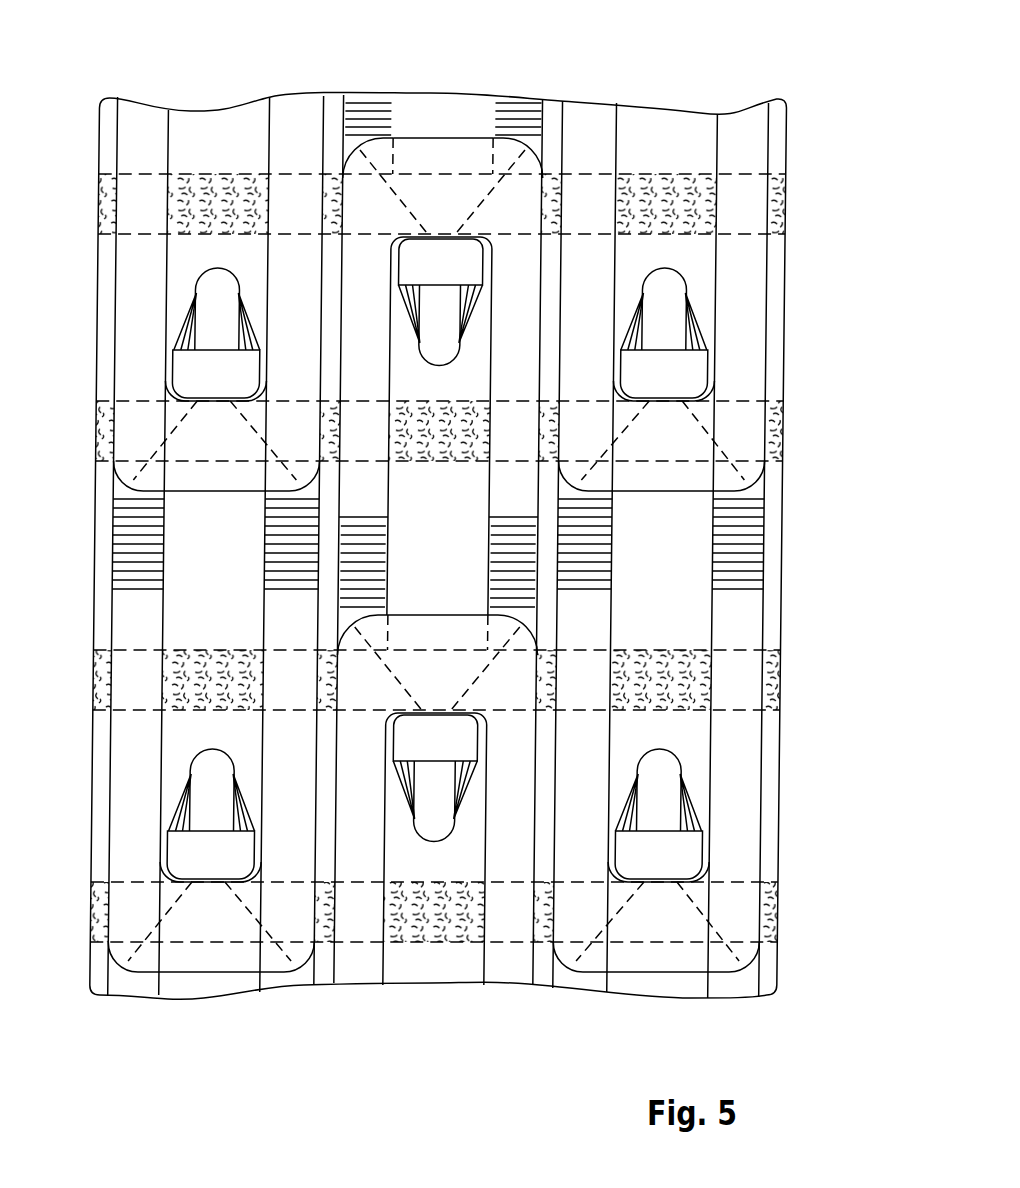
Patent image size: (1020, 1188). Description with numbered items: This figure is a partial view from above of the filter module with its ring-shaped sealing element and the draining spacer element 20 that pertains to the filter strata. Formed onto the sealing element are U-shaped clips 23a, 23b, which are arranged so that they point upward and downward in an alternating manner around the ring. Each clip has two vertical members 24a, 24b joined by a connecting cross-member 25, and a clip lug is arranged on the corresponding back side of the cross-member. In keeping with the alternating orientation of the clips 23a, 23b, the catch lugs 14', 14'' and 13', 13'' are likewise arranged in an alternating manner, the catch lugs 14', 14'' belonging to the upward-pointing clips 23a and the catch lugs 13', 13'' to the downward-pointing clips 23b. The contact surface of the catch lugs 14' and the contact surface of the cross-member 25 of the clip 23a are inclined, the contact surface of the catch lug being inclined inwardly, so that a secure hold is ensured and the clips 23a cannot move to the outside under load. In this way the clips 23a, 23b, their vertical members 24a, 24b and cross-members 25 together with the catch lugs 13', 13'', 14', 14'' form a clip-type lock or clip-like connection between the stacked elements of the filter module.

The catch lug 13' is at (437, 815).
The catch lug 13'' is at (435, 875).
The catch lug 14' is at (444, 334).
The catch lug 14'' is at (439, 328).
The draining spacer element 20 is at (207, 593).
The clip 23a is at (472, 152).
The clip 23b is at (143, 139).
The vertical member 24a is at (360, 273).
The vertical member 24b is at (523, 273).
The cross-member 25 is at (415, 160).